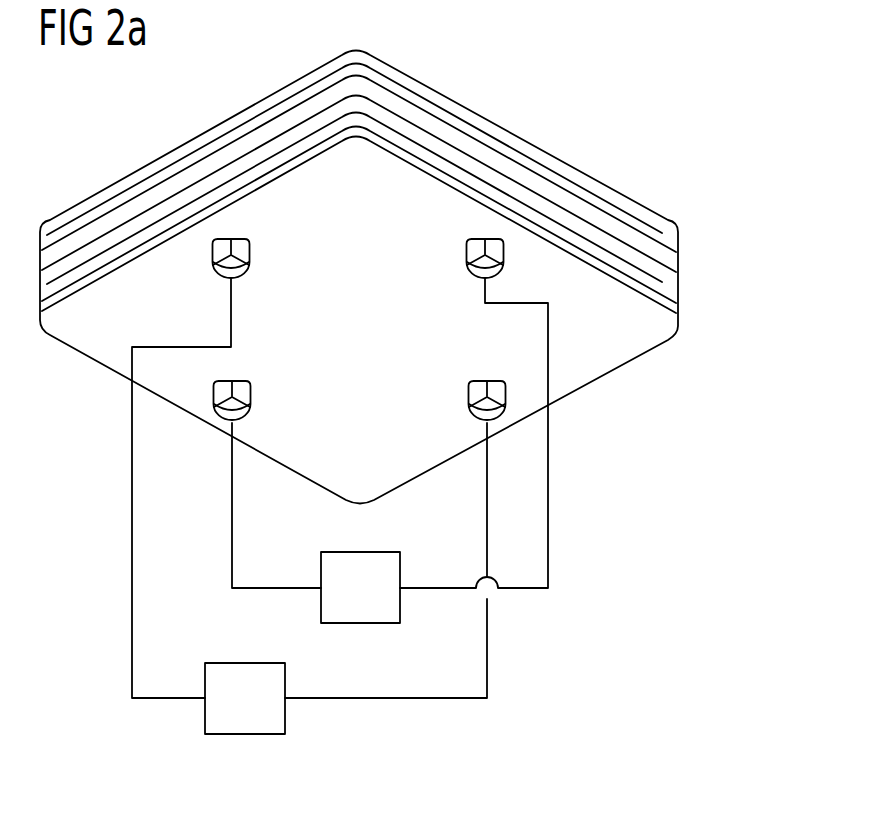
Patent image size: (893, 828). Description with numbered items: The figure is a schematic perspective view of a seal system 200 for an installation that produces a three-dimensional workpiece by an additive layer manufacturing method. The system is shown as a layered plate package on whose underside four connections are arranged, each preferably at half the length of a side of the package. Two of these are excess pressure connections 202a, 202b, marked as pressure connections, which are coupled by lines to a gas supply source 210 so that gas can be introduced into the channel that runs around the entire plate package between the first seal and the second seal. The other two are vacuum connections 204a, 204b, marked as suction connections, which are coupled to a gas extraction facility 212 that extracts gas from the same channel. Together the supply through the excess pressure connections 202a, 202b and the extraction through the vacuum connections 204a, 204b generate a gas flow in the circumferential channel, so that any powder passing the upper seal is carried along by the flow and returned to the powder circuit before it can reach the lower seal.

The seal system 200 is at (687, 192).
The excess pressure connection 202a is at (210, 242).
The excess pressure connection 202b is at (527, 438).
The vacuum connection 204a is at (213, 445).
The vacuum connection 204b is at (505, 235).
The gas supply source 210 is at (204, 722).
The gas extraction facility 212 is at (364, 624).